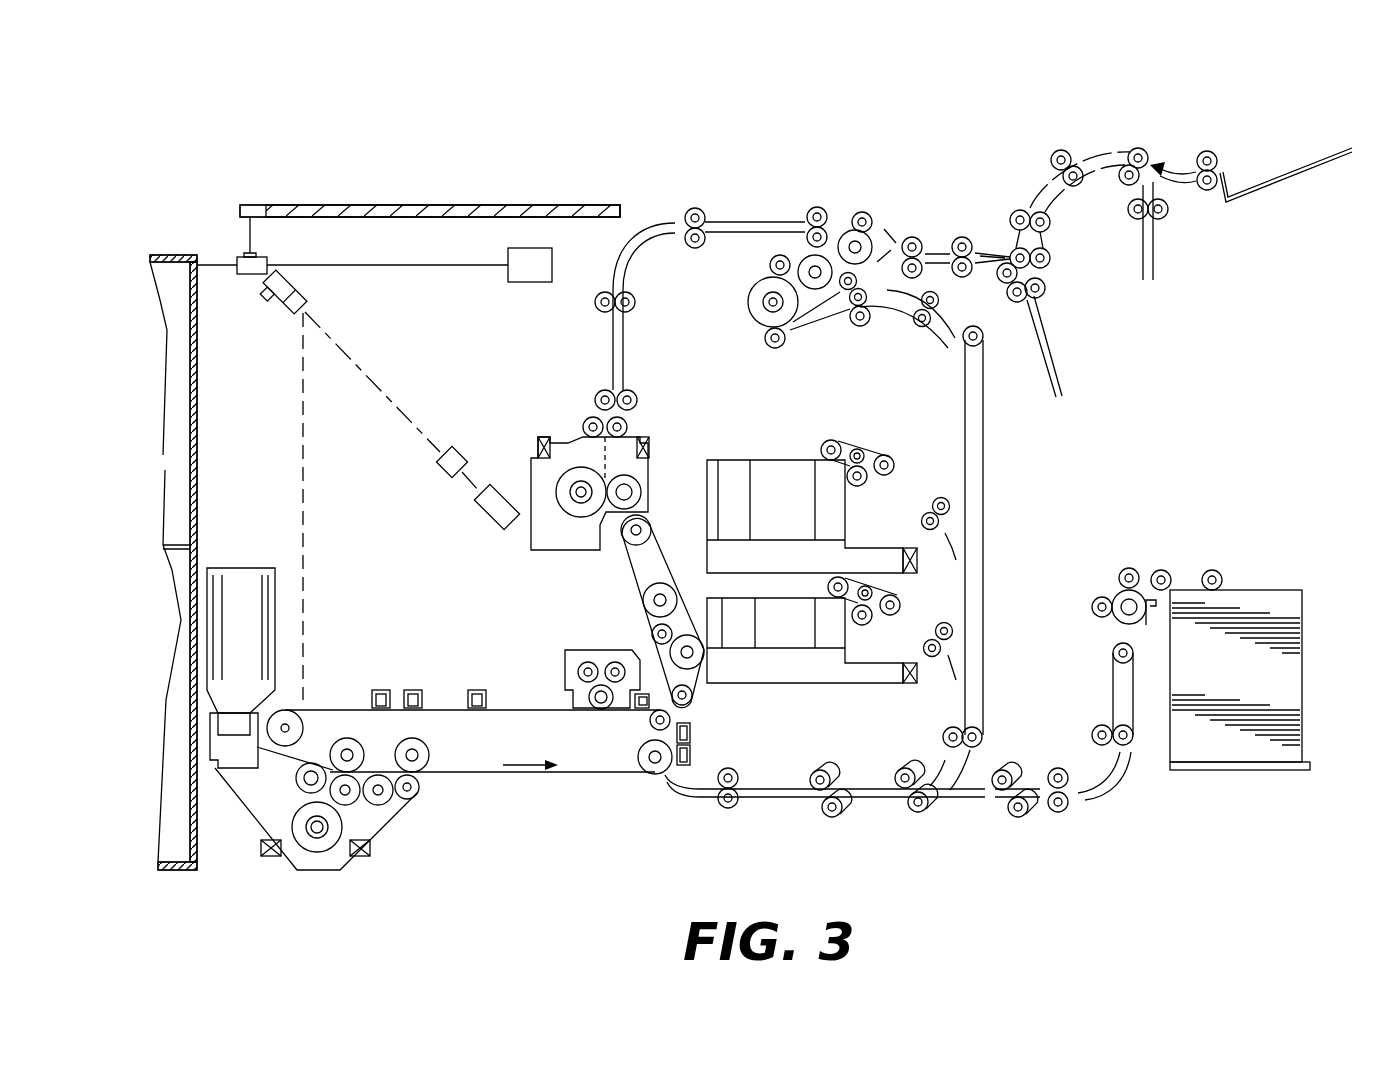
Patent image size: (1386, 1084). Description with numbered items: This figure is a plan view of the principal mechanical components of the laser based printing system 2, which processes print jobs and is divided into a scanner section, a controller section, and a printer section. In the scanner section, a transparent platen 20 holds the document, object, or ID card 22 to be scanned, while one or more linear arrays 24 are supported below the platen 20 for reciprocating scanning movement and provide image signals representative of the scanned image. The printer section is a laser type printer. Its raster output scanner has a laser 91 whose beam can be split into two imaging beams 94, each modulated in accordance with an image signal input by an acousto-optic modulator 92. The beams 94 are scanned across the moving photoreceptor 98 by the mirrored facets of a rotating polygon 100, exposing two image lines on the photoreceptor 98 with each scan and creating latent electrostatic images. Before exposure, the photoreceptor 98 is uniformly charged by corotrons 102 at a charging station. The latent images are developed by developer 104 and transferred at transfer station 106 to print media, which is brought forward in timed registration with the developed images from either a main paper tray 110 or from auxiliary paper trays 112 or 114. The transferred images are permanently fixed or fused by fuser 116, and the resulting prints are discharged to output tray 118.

The printing system 2 is at (882, 90).
The transparent platen 20 is at (415, 220).
The ID card 22 is at (303, 200).
The linear array 24 is at (243, 258).
The laser 91 is at (487, 513).
The acousto-optic modulator 92 is at (448, 473).
The imaging beams 94 is at (383, 378).
The photoreceptor 98 is at (572, 775).
The rotating polygon 100 is at (290, 312).
The corotrons 102 is at (477, 690).
The developer 104 is at (387, 825).
The transfer station 106 is at (673, 805).
The main paper tray 110 is at (1198, 770).
The auxiliary paper tray 112 is at (770, 685).
The auxiliary paper tray 114 is at (785, 460).
The fuser 116 is at (650, 428).
The output tray 118 is at (1285, 180).